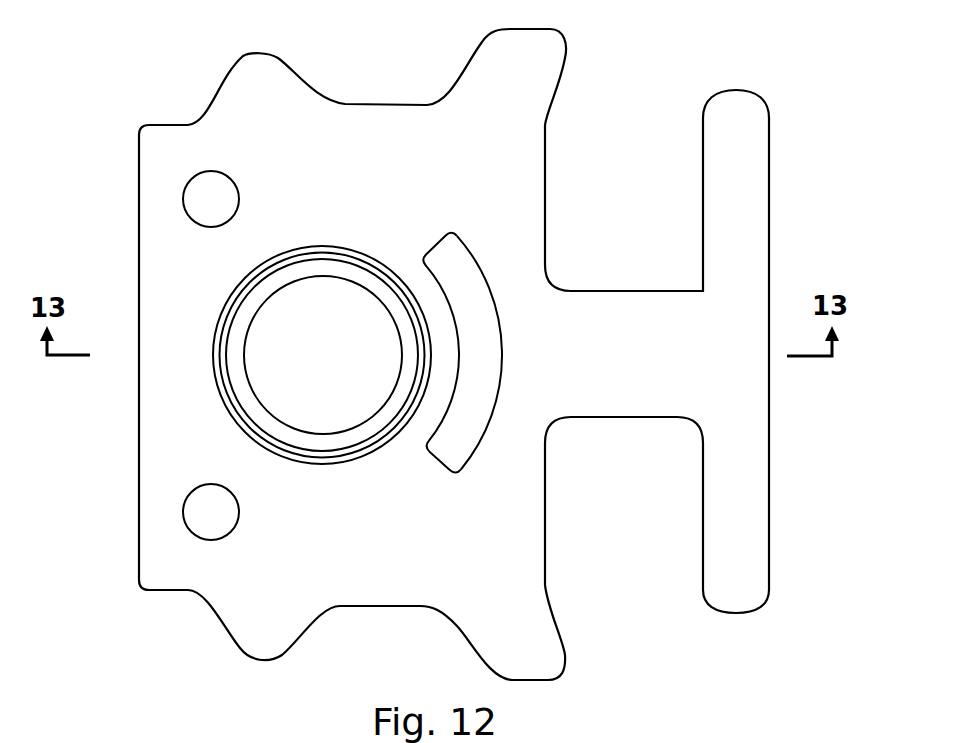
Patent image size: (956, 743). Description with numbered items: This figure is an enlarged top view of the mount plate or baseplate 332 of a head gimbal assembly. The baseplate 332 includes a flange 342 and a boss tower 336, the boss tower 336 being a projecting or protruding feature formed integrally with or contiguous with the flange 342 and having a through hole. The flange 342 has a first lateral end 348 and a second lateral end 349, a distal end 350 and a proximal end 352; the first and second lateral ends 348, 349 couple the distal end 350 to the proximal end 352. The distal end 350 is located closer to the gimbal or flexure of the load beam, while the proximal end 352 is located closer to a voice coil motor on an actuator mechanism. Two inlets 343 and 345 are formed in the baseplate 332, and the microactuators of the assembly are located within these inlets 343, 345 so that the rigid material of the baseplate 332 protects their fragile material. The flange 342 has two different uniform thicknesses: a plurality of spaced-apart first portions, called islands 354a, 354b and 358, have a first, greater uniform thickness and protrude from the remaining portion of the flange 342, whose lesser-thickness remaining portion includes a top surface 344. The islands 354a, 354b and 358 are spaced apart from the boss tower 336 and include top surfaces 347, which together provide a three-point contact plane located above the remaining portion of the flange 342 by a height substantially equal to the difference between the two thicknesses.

The baseplate 332 is at (808, 62).
The boss tower 336 is at (351, 271).
The flange 342 is at (391, 627).
The inlet 343 is at (626, 494).
The top surface 344 is at (360, 524).
The inlet 345 is at (630, 170).
The top surfaces 347 is at (220, 190).
The first lateral end 348 is at (408, 104).
The second lateral end 349 is at (340, 606).
The distal end 350 is at (769, 187).
The proximal end 352 is at (139, 262).
The island 354a is at (183, 200).
The island 354b is at (183, 512).
The island 358 is at (503, 389).